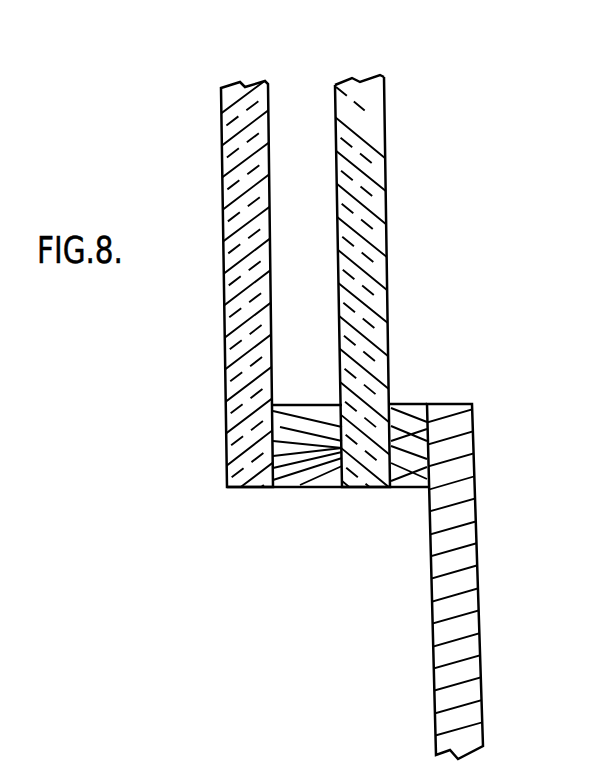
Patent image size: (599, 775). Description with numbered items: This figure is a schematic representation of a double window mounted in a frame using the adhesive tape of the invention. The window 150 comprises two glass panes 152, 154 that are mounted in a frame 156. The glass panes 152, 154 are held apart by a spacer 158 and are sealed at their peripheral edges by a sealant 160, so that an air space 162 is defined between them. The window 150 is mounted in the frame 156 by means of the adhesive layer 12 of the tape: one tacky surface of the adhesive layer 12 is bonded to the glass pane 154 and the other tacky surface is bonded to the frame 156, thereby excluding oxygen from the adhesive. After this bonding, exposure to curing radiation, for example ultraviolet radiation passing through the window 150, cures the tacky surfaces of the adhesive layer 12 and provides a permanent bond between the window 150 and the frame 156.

The window 150 is at (219, 138).
The glass pane 152 is at (238, 328).
The glass pane 154 is at (380, 362).
The air space 162 is at (335, 118).
The spacer 158 is at (286, 429).
The sealant 160 is at (305, 489).
The adhesive layer 12 is at (410, 430).
The frame 156 is at (458, 483).